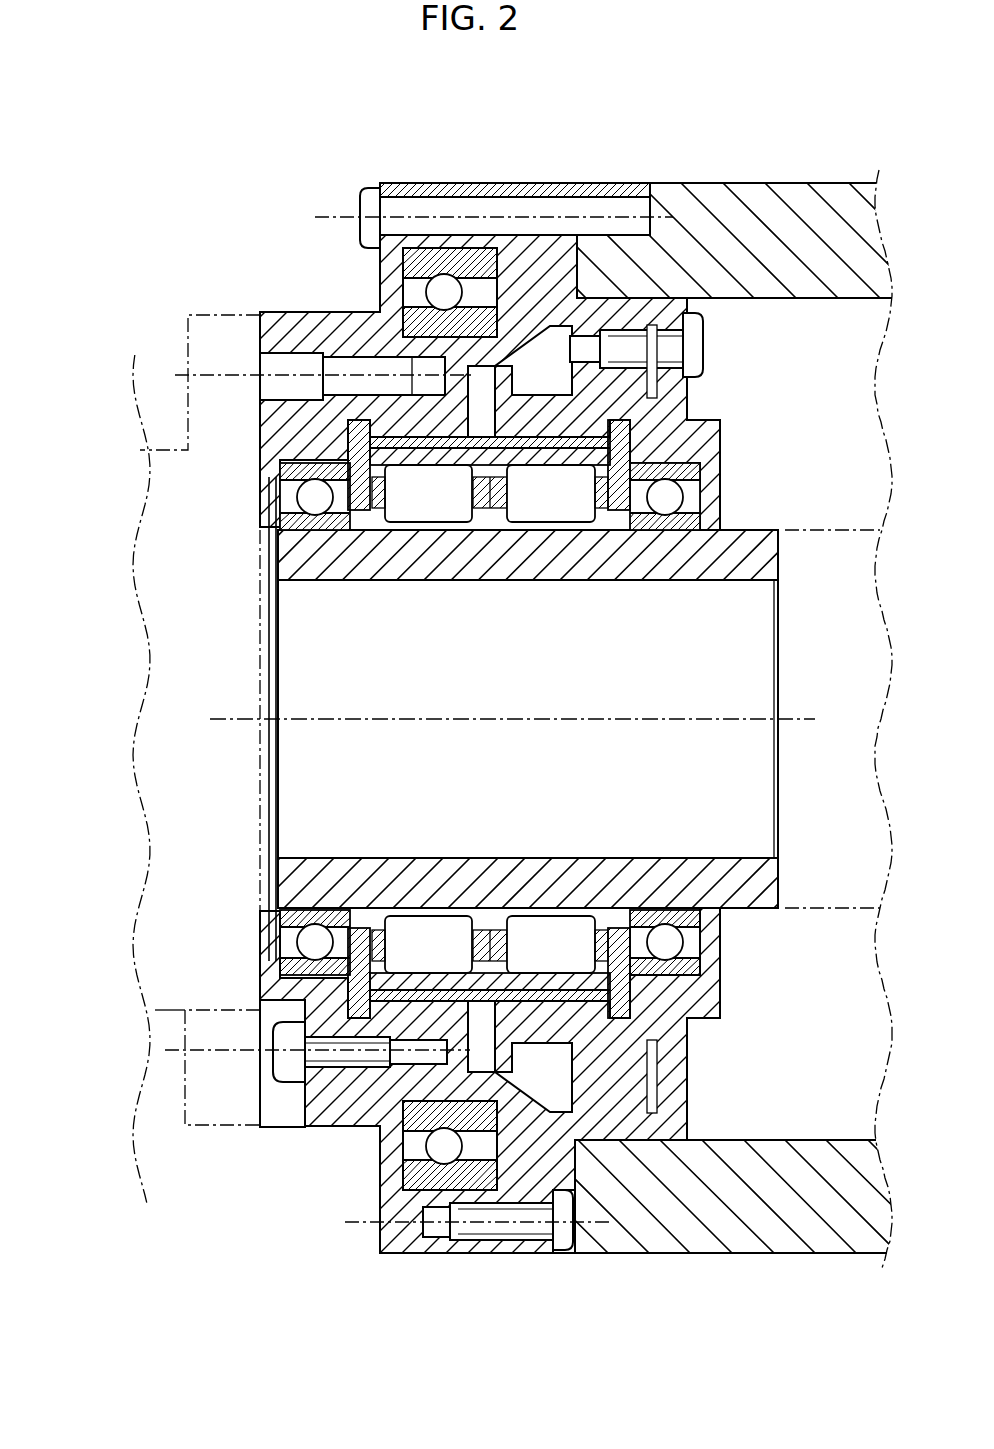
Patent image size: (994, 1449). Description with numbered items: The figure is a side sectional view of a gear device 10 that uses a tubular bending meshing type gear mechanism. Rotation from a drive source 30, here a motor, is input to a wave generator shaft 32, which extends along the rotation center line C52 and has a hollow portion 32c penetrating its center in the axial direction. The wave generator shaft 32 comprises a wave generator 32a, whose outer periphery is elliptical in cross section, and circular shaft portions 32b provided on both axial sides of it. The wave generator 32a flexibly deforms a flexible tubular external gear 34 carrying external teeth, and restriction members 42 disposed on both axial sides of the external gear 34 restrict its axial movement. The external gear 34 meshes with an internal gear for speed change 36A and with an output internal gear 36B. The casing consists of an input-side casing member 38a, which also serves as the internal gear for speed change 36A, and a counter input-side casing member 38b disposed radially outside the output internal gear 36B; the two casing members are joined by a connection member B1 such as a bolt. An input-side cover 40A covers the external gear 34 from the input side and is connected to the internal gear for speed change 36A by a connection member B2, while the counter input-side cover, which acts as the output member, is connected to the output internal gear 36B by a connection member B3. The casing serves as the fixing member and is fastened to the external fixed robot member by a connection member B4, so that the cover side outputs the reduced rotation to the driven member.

The gear device 10 is at (240, 176).
The connection member B4 is at (358, 218).
The connection member B2 is at (705, 352).
The drive source 30 is at (833, 530).
The wave generator shaft 32 is at (760, 925).
The wave generator 32a is at (497, 512).
The shaft portion 32b is at (345, 532).
The hollow portion 32c is at (575, 582).
The rotation center line C52 is at (806, 724).
The restriction member 42 is at (358, 926).
The internal gear for speed change 36A is at (545, 918).
The output internal gear 36B is at (470, 973).
The external gear 34 is at (505, 1000).
The input-side cover 40A is at (722, 1000).
The connection member B3 is at (275, 1050).
The counter input-side casing member 38b is at (468, 1255).
The connection member B1 is at (566, 1255).
The input-side casing member 38a is at (637, 1145).